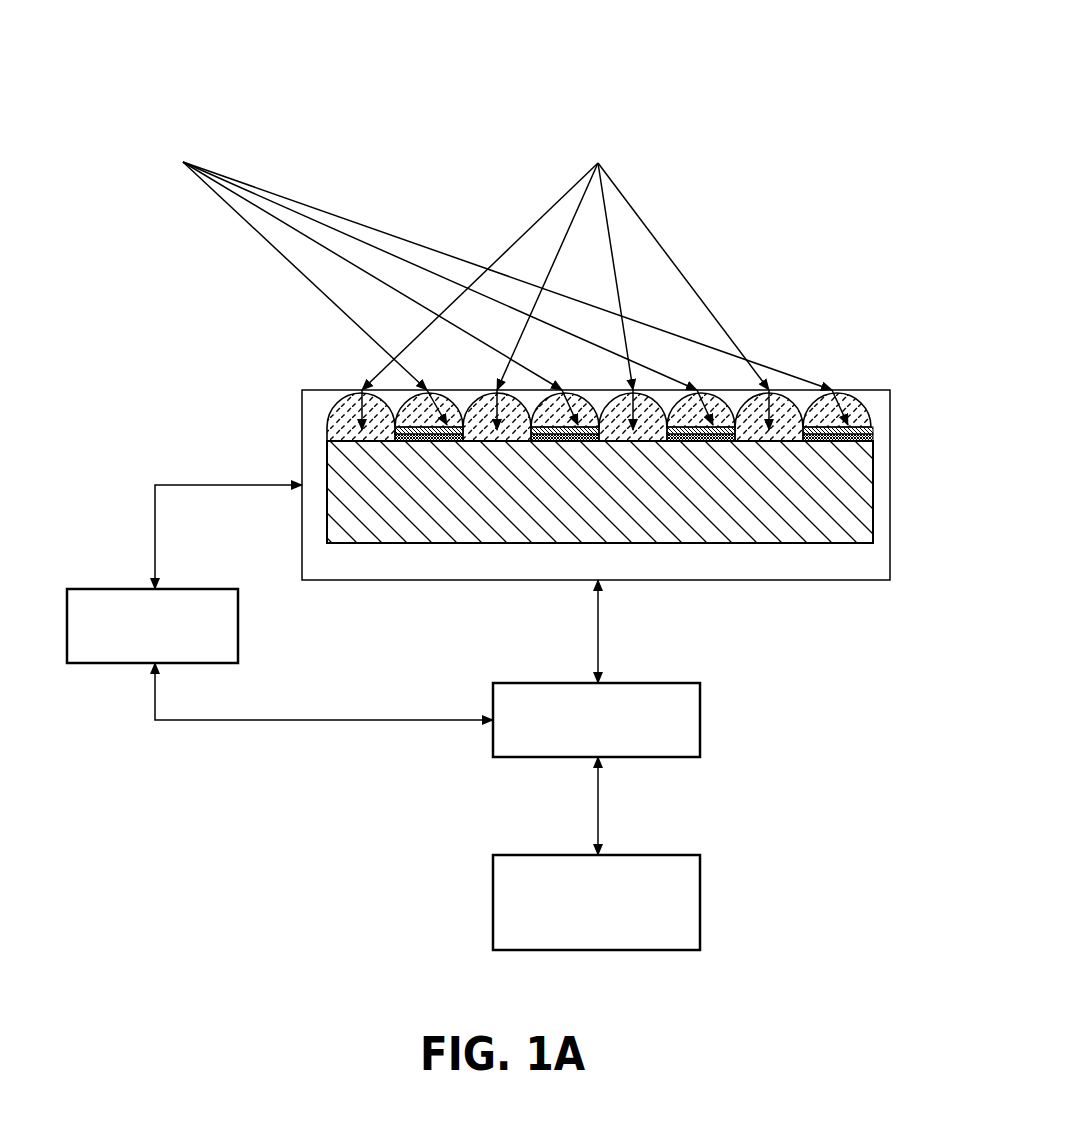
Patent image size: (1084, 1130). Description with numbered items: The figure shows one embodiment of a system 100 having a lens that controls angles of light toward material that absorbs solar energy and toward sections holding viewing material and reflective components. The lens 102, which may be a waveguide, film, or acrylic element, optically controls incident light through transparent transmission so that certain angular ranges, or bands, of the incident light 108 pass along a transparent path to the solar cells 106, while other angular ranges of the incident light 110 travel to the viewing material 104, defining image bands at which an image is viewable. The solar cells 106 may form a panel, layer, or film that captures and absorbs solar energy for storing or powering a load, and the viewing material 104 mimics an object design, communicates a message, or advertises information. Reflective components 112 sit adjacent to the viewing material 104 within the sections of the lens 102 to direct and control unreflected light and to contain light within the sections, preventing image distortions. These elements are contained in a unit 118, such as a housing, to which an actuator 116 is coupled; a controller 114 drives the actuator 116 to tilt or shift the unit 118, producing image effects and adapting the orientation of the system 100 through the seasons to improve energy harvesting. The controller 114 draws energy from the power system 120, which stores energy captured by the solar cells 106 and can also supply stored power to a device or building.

The system 100 is at (850, 130).
The lens 102 is at (867, 400).
The viewing material 104 is at (875, 432).
The solar cells 106 is at (467, 544).
The incident light 108 is at (566, 198).
The incident light 110 is at (263, 235).
The reflective components 112 is at (875, 439).
The controller 114 is at (700, 732).
The actuator 116 is at (98, 588).
The unit 118 is at (300, 407).
The power system 120 is at (700, 918).